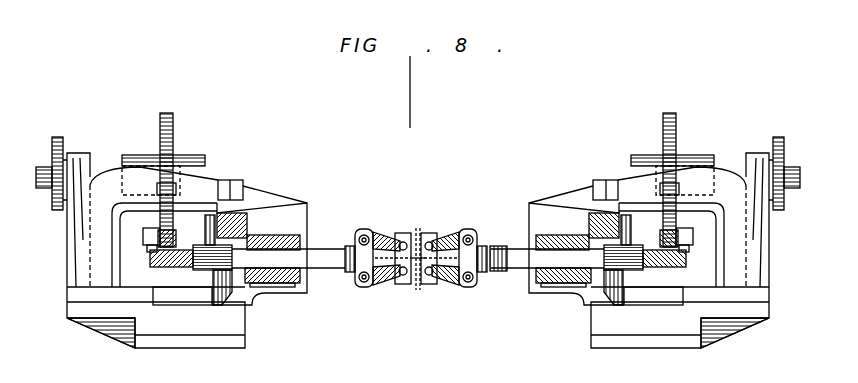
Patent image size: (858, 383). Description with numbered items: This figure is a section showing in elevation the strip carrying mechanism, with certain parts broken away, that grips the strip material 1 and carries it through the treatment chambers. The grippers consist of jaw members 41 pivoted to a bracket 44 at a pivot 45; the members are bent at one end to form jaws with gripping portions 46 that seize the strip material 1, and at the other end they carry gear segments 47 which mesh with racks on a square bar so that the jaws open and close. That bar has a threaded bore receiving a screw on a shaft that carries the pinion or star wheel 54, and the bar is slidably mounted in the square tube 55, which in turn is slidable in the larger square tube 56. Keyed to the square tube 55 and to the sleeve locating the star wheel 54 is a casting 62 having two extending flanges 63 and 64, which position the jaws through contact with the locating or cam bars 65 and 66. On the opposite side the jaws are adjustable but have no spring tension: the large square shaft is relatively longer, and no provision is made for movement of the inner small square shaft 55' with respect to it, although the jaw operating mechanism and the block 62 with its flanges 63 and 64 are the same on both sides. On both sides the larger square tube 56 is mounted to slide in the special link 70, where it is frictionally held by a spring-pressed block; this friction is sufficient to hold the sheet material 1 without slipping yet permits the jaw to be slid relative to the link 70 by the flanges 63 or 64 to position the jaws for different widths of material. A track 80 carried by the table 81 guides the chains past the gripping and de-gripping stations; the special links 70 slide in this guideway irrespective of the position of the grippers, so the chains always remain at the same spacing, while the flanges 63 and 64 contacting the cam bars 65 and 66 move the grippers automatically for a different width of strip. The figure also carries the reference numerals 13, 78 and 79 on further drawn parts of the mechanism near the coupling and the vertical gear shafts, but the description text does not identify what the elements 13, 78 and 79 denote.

The strip material 1 is at (400, 262).
The coupling pin 13 is at (400, 270).
The jaw members 41 is at (444, 238).
The bracket 44 is at (462, 288).
The pivot 45 is at (378, 236).
The gripping portions 46 is at (436, 265).
The gear segments 47 is at (356, 235).
The star wheel 54 is at (190, 270).
The square tube 55 is at (524, 303).
The inner small square shaft 55' is at (418, 192).
The square tube 56 is at (311, 255).
The casting 62 is at (214, 292).
The flange 63 is at (228, 300).
The flange 64 is at (206, 228).
The cam bar 65 is at (208, 310).
The cam bar 66 is at (246, 212).
The special link 70 is at (304, 235).
The rod 78 is at (143, 236).
The gear shaft 79 is at (160, 150).
The track 80 is at (283, 233).
The table 81 is at (228, 322).